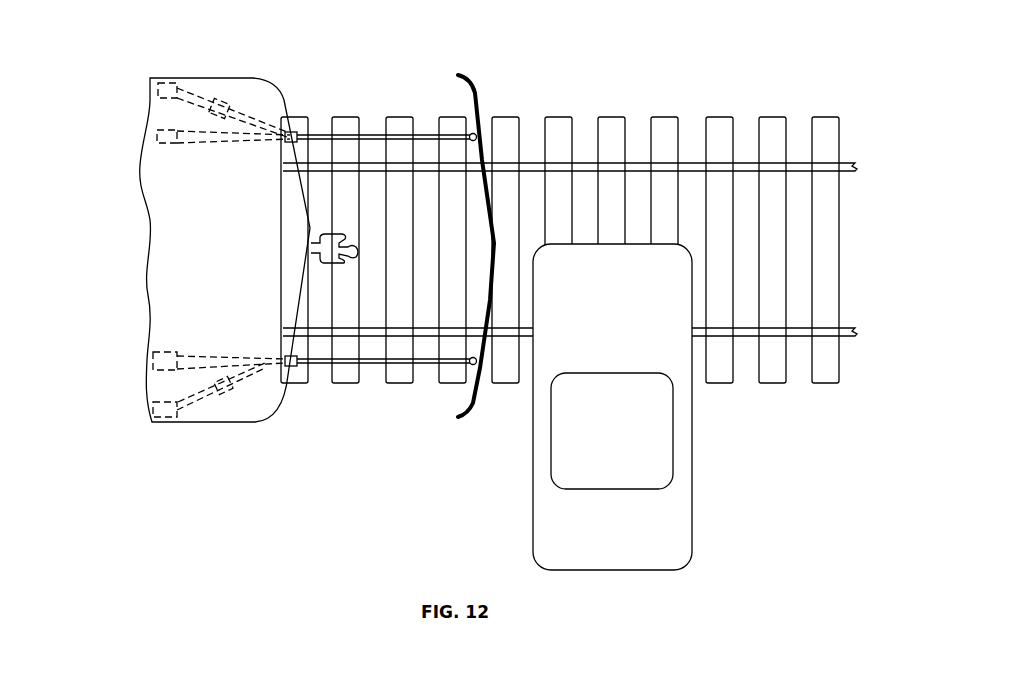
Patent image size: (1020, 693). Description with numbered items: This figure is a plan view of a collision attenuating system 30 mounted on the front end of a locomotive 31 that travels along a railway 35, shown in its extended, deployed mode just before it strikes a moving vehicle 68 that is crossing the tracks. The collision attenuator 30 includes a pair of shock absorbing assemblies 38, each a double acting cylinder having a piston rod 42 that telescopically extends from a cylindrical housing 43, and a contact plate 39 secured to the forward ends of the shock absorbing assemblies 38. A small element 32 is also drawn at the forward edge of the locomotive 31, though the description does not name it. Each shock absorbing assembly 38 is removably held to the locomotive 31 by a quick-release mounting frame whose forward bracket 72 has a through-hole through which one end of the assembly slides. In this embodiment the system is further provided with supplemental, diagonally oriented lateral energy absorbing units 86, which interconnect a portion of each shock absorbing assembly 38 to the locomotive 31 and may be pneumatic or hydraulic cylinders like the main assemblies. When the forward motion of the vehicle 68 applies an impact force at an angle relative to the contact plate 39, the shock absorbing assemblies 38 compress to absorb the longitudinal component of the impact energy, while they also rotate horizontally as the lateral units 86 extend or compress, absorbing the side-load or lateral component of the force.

The collision attenuator 30 is at (447, 62).
The locomotive 31 is at (148, 240).
The clip 32 is at (309, 248).
The railway 35 is at (750, 162).
The shock absorbing assembly 38 is at (294, 126).
The contact plate 39 is at (480, 97).
The piston rod 42 is at (373, 133).
The cylindrical housing 43 is at (203, 137).
The moving vehicle 68 is at (694, 434).
The forward bracket 72 is at (153, 81).
The lateral energy absorbing unit 86 is at (206, 96).